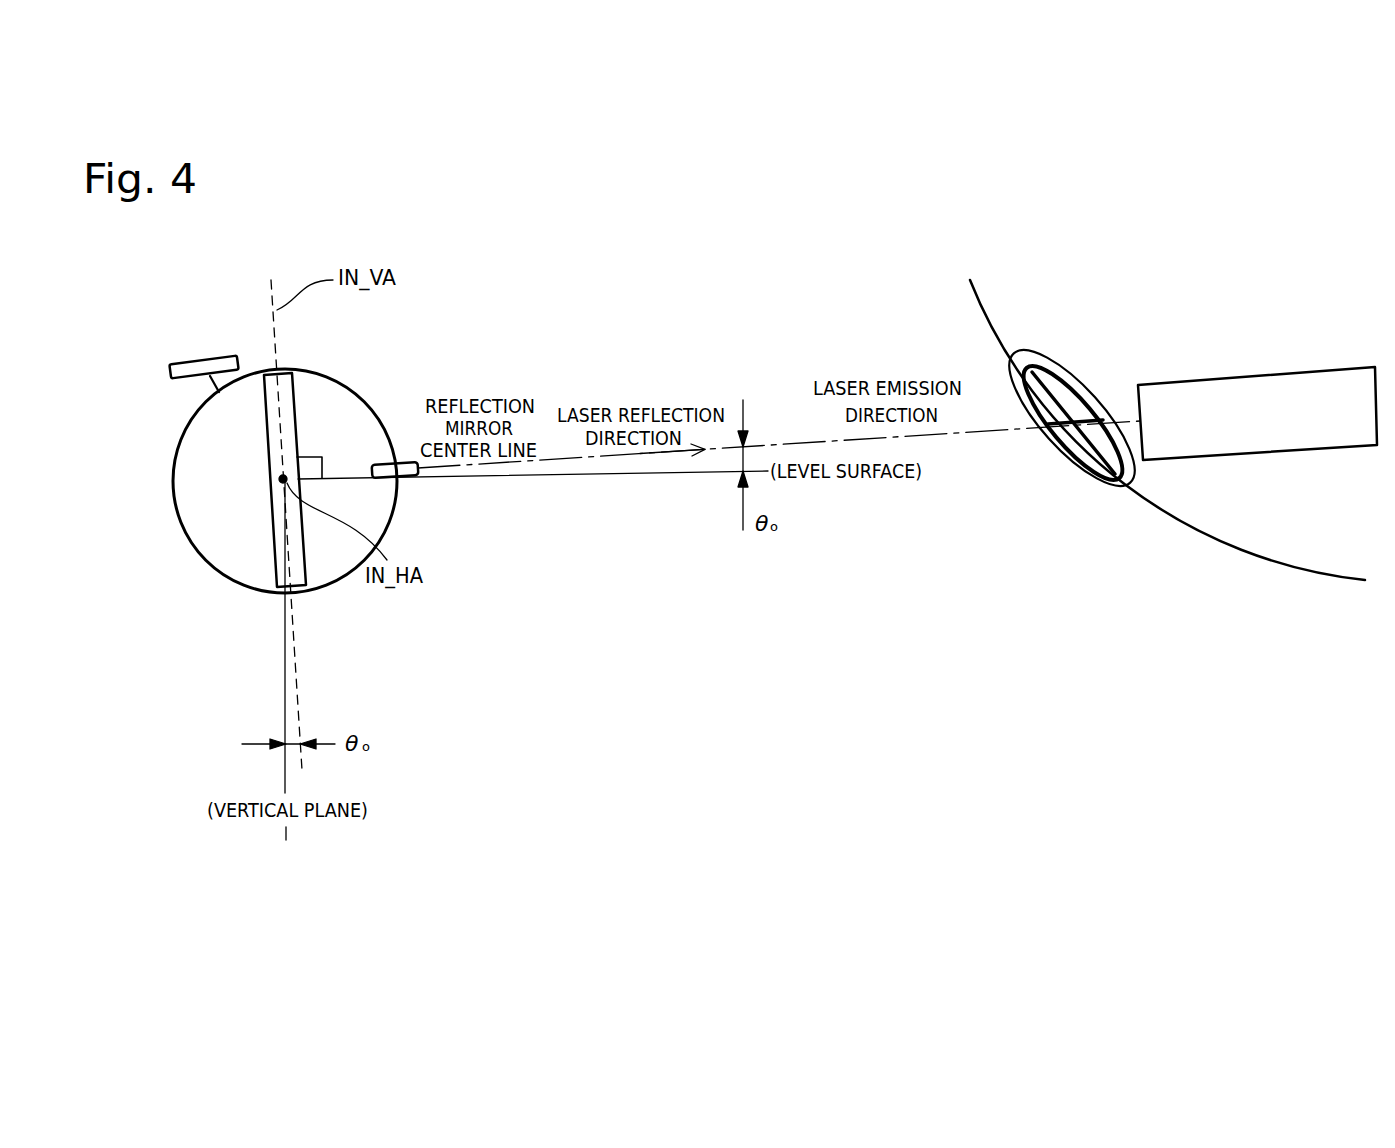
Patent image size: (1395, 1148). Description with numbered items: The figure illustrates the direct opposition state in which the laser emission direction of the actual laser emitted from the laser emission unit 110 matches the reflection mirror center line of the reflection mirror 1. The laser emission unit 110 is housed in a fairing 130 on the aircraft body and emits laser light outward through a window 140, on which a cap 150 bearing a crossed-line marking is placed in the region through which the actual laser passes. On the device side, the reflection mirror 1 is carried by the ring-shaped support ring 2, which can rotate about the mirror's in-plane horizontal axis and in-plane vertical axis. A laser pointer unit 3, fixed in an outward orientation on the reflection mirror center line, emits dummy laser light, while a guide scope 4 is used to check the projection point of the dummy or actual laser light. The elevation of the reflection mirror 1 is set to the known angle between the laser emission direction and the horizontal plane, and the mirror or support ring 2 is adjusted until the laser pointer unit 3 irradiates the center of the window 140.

The reflection mirror 1 is at (297, 415).
The support ring 2 is at (318, 594).
The laser pointer unit 3 is at (402, 478).
The guide scope 4 is at (205, 360).
The laser emission unit 110 is at (1260, 370).
The fairing 130 is at (1233, 543).
The window 140 is at (1081, 354).
The cap 150 is at (1070, 462).